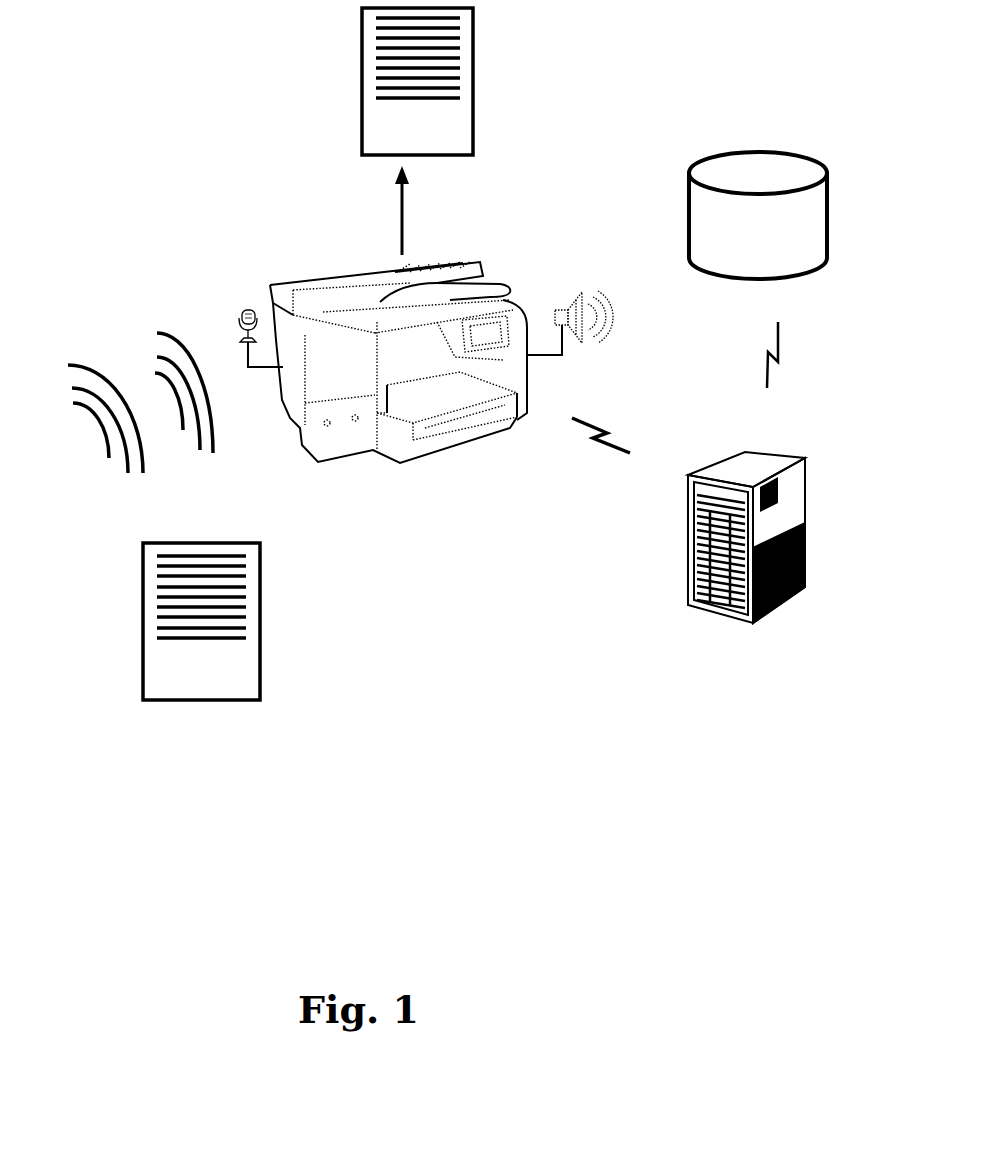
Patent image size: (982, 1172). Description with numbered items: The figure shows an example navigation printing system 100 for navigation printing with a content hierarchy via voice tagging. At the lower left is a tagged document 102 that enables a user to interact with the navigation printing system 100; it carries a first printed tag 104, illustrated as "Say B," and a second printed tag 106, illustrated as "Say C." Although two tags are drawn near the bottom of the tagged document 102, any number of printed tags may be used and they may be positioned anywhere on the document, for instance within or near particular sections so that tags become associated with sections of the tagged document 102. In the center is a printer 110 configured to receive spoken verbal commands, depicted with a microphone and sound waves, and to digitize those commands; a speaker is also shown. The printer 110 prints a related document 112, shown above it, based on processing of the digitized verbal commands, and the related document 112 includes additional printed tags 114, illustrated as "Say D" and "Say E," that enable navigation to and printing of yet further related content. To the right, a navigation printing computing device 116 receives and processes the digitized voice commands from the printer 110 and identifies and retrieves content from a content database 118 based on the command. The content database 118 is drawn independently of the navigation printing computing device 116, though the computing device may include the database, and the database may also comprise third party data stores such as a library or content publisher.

The navigation printing system 100 is at (178, 140).
The tagged document 102 is at (260, 570).
The first printed tag 104 is at (180, 685).
The second printed tag 106 is at (245, 672).
The printer 110 is at (288, 275).
The related document 112 is at (478, 23).
The additional printed tags 114 is at (473, 148).
The navigation printing computing device 116 is at (803, 487).
The content database 118 is at (690, 172).